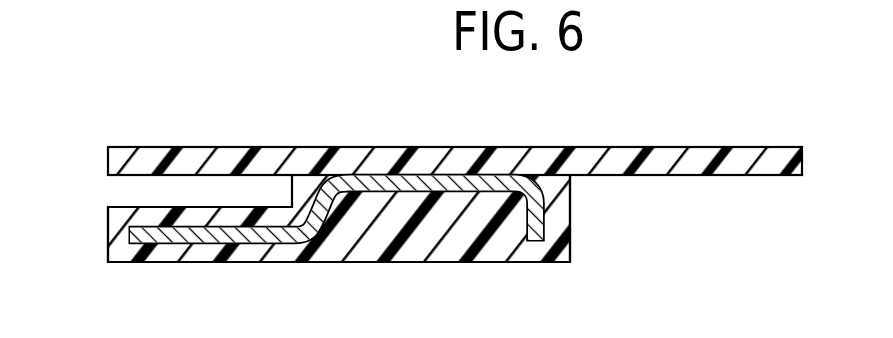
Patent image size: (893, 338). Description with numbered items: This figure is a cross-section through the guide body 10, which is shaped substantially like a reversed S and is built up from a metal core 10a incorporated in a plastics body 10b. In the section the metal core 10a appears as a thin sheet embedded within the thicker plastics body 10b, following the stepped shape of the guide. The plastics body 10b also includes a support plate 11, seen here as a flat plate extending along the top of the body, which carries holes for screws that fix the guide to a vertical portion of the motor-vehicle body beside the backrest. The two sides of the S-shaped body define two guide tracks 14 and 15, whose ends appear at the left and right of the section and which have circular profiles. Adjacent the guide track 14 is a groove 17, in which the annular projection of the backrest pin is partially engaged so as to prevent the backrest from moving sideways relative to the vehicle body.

The guide body 10 is at (339, 205).
The metal core 10a is at (413, 184).
The plastics body 10b is at (471, 238).
The support plate 11 is at (730, 147).
The guide track 14 is at (108, 232).
The guide track 15 is at (570, 222).
The groove 17 is at (162, 207).